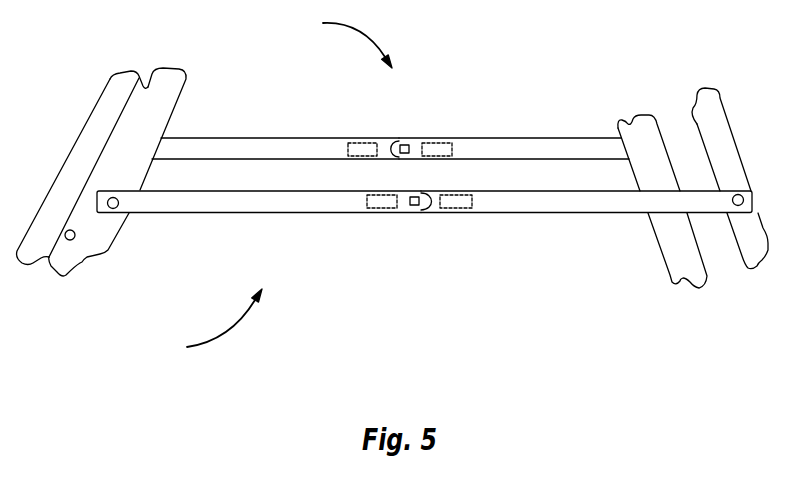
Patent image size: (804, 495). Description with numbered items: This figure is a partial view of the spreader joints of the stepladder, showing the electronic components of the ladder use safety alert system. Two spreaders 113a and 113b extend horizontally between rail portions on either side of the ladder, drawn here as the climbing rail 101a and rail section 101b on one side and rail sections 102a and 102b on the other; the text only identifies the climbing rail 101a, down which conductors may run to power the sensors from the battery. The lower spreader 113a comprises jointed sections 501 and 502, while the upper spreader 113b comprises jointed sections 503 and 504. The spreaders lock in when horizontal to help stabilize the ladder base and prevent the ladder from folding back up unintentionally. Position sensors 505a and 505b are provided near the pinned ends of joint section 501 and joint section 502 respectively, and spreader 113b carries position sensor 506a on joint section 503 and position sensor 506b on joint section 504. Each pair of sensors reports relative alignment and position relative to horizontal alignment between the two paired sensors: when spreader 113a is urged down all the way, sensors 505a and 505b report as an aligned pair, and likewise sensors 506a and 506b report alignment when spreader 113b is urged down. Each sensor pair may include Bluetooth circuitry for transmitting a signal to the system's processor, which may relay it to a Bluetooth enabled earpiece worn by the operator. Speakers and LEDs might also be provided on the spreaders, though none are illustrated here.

The climbing rail 101a is at (125, 226).
The second strap portion 101b is at (92, 110).
The third strap portion 102a is at (738, 147).
The fourth strap portion 102b is at (650, 230).
The spreader 113a is at (196, 325).
The spreader 113b is at (328, 39).
The joint section 501 is at (282, 214).
The joint section 502 is at (557, 214).
The joint section 503 is at (282, 162).
The joint section 504 is at (557, 160).
The position sensor 505a is at (382, 209).
The position sensor 505b is at (457, 210).
The position sensor 506a is at (360, 141).
The position sensor 506b is at (440, 141).